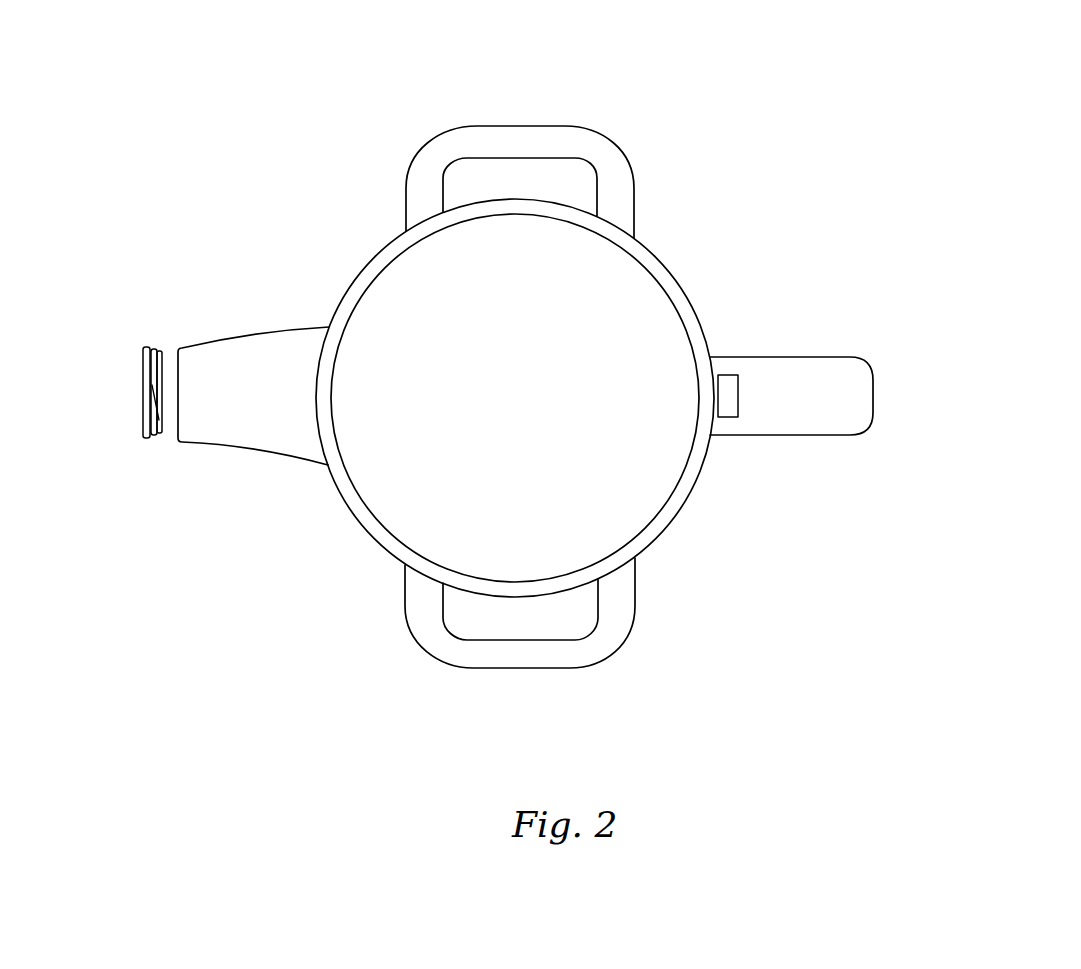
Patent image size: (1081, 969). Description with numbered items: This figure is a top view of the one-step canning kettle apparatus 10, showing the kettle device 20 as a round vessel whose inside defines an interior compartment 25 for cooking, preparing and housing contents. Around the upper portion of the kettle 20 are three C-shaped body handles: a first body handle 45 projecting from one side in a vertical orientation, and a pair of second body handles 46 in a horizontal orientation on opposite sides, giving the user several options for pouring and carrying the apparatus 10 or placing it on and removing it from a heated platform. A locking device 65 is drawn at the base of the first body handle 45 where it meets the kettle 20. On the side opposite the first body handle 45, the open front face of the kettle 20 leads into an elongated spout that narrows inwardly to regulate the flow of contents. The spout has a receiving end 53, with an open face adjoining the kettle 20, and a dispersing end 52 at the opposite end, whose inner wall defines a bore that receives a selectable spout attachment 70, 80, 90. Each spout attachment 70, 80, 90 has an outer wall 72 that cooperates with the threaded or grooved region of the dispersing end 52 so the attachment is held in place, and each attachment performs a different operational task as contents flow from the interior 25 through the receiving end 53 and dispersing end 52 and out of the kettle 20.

The one-step canning kettle apparatus 10 is at (993, 170).
The kettle device 20 is at (655, 263).
The interior compartment 25 is at (397, 283).
The first body handle 45 is at (828, 395).
The second body handles 46 is at (458, 153).
The dispersing end 52 is at (243, 382).
The receiving end 53 is at (318, 397).
The locking device 65 is at (727, 398).
The spout attachment 70 is at (143, 389).
The outer wall 72 is at (157, 405).
The spout attachment 80 is at (146, 437).
The spout attachment 90 is at (146, 438).